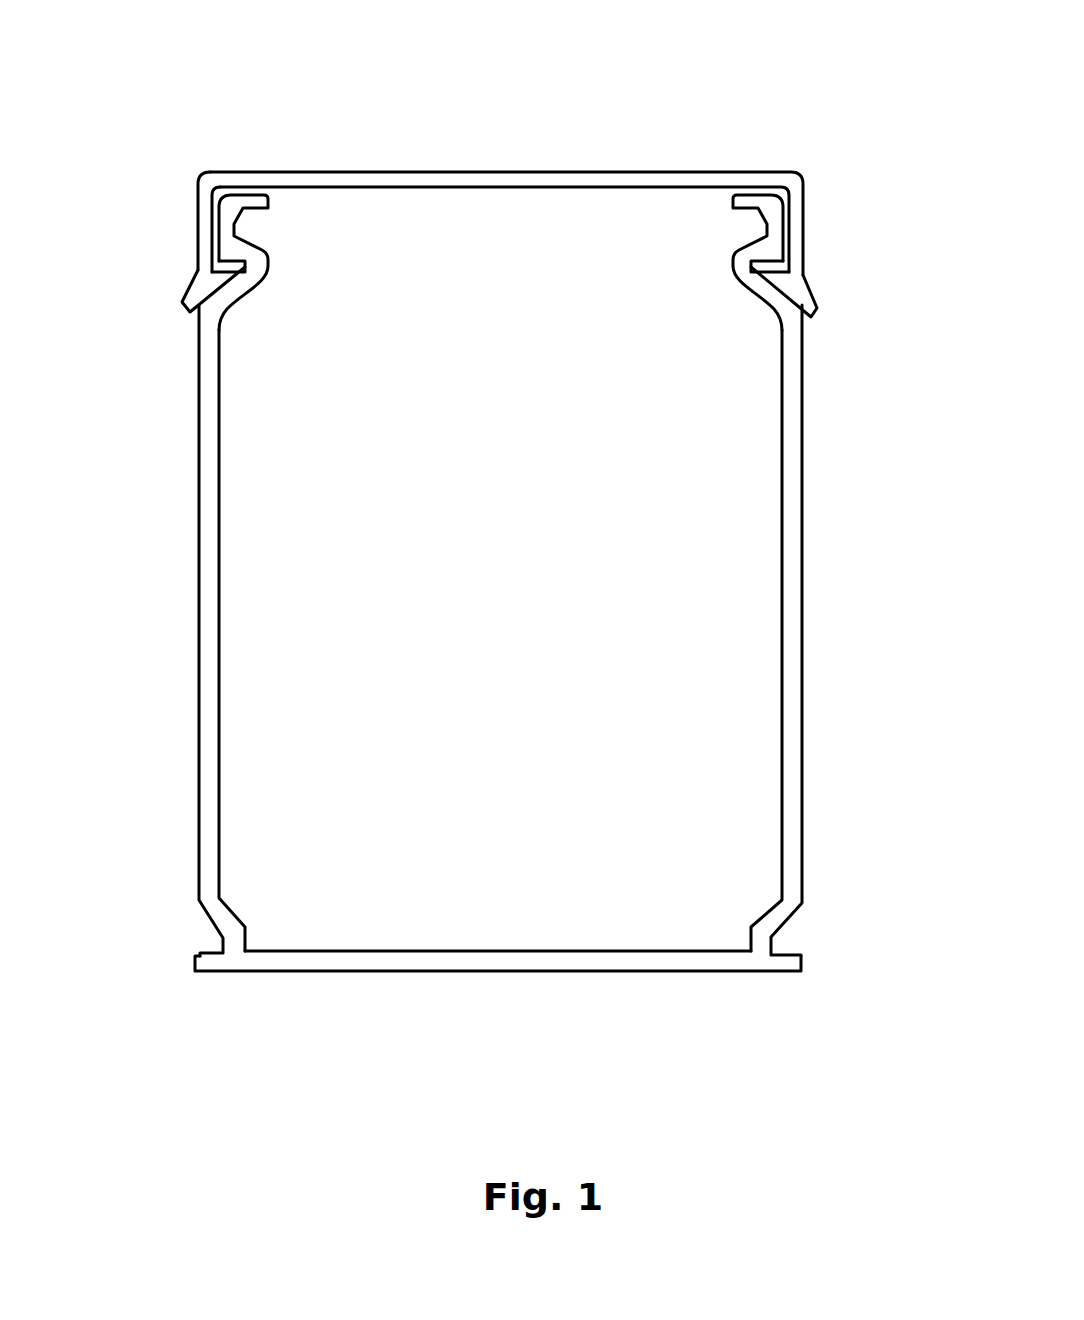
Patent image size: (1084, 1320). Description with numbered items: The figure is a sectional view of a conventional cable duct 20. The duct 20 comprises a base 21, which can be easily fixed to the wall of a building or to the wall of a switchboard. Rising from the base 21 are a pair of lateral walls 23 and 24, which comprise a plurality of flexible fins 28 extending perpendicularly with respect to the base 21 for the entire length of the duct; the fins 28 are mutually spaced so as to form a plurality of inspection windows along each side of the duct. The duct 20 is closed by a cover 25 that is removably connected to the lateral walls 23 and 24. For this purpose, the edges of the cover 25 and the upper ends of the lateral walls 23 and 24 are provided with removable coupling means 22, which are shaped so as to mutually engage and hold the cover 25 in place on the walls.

The cable duct 20 is at (715, 81).
The base 21 is at (646, 960).
The removable coupling means 22 is at (838, 239).
The lateral wall 23 is at (212, 567).
The lateral wall 24 is at (789, 547).
The cover 25 is at (503, 178).
The flexible fins 28 is at (275, 296).